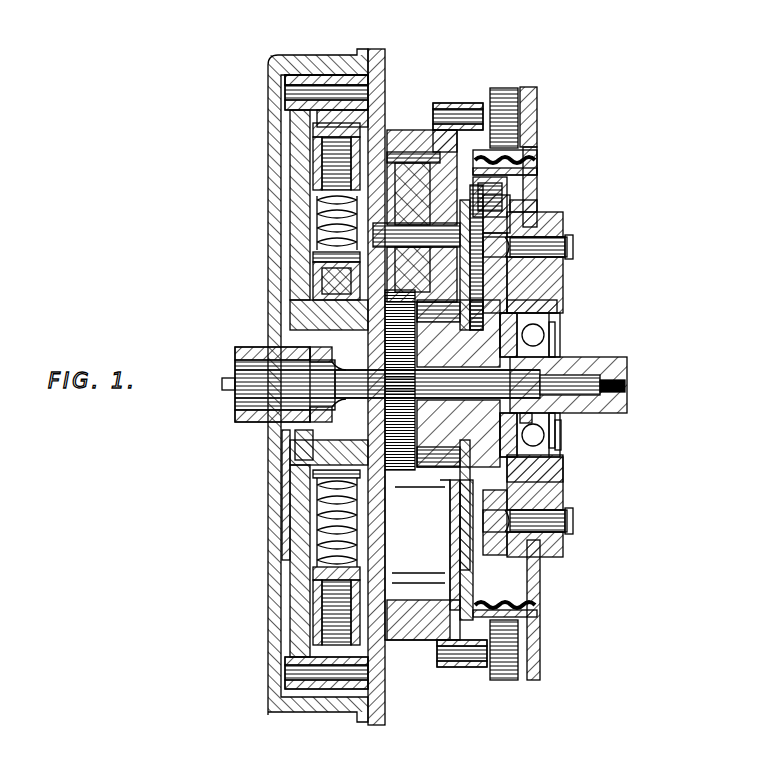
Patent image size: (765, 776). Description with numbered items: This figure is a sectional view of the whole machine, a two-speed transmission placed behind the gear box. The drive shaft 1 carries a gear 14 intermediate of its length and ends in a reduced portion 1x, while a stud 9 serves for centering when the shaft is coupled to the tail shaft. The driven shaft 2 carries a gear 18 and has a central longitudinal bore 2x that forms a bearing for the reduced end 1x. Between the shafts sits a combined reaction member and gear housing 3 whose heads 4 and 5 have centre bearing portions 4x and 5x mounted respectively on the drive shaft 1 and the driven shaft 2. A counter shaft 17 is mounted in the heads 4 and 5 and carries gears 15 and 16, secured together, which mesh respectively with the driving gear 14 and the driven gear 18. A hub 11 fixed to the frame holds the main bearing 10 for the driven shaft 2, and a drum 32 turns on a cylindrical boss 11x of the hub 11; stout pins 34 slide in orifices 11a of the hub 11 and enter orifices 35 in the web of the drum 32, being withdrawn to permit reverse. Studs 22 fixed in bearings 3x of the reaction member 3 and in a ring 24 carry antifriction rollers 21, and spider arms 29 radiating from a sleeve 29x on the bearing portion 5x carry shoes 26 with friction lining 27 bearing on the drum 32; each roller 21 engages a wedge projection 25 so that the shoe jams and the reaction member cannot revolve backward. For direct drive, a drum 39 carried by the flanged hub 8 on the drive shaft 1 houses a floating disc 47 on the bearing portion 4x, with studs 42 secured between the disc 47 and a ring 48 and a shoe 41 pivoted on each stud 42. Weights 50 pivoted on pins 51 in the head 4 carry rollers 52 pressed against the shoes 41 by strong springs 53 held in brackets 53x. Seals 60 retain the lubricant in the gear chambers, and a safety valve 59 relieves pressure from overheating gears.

The drive shaft 1 is at (245, 400).
The reduced portion 1x is at (545, 417).
The driven shaft 2 is at (628, 380).
The central longitudinal bore 2x is at (555, 432).
The reaction member 3 is at (405, 130).
The bearings 3x is at (448, 125).
The head 4 is at (380, 560).
The centre bearing portion 4x is at (322, 447).
The head 5 is at (392, 573).
The centre bearing portion 5x is at (552, 466).
The flanged hub 8 is at (240, 349).
The stud 9 is at (224, 385).
The main bearing 10 is at (553, 325).
The hub 11 is at (556, 290).
The orifices 11a is at (562, 230).
The cylindrical boss 11x is at (546, 306).
The gear 14 is at (403, 470).
The gear 15 is at (410, 150).
The gear 16 is at (425, 192).
The counter shaft 17 is at (472, 212).
The gear 18 is at (432, 470).
The antifriction rollers 21 is at (536, 90).
The studs 22 is at (502, 88).
The ring 24 is at (538, 96).
The wedge projection 25 is at (535, 150).
The shoes 26 is at (532, 165).
The friction lining 27 is at (540, 173).
The spider arms 29 is at (495, 190).
The sleeve 29x is at (555, 308).
The drum 32 is at (512, 200).
The stout pins 34 is at (575, 250).
The orifices 35 is at (538, 216).
The drum 39 is at (272, 62).
The shoe 41 is at (352, 83).
The studs 42 is at (313, 92).
The disc 47 is at (292, 215).
The ring 48 is at (380, 74).
The weights 50 is at (322, 175).
The pin 51 is at (400, 633).
The roller 52 is at (315, 132).
The spring 53 is at (312, 255).
The bracket 53x is at (330, 272).
The safety valve 59 is at (612, 390).
The seals 60 is at (556, 350).